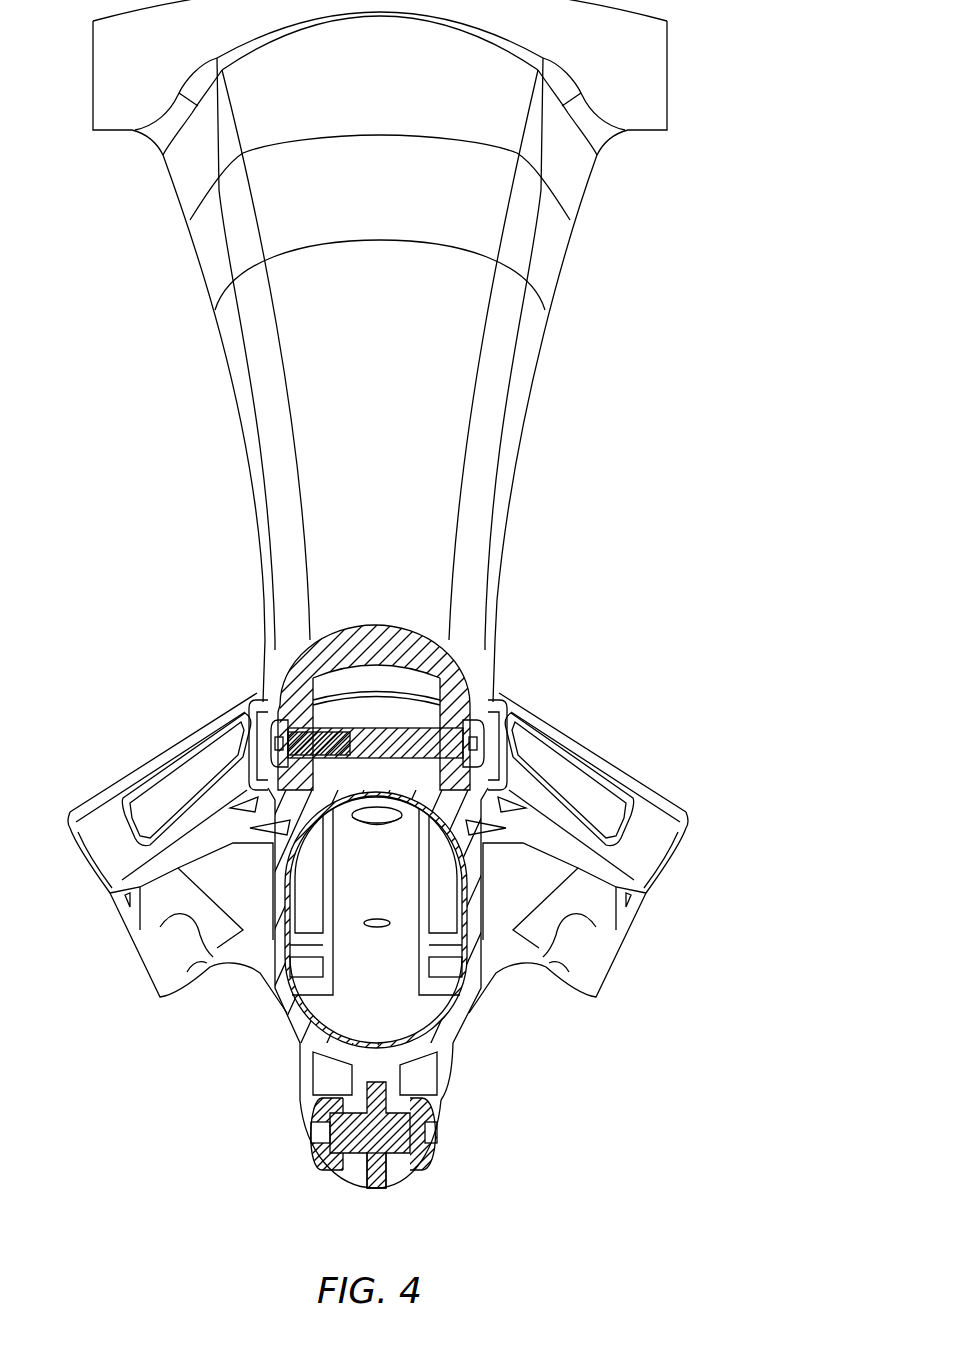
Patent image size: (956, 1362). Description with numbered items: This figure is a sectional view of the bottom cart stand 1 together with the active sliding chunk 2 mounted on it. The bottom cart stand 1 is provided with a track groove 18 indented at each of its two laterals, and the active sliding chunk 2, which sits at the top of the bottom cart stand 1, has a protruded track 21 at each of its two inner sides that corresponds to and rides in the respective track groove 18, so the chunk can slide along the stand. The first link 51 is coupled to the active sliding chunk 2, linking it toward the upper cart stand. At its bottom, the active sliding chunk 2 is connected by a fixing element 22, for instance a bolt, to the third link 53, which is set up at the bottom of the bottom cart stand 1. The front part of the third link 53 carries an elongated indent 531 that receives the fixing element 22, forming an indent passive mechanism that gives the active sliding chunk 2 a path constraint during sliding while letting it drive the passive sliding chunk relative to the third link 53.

The first link 51 is at (470, 572).
The active sliding chunk 2 is at (623, 917).
The bottom cart stand 1 is at (348, 893).
The track groove 18 is at (440, 993).
The protruded track 21 is at (450, 983).
The fixing element 22 is at (303, 1103).
The third link 53 is at (373, 1183).
The elongated indent 531 is at (393, 1178).